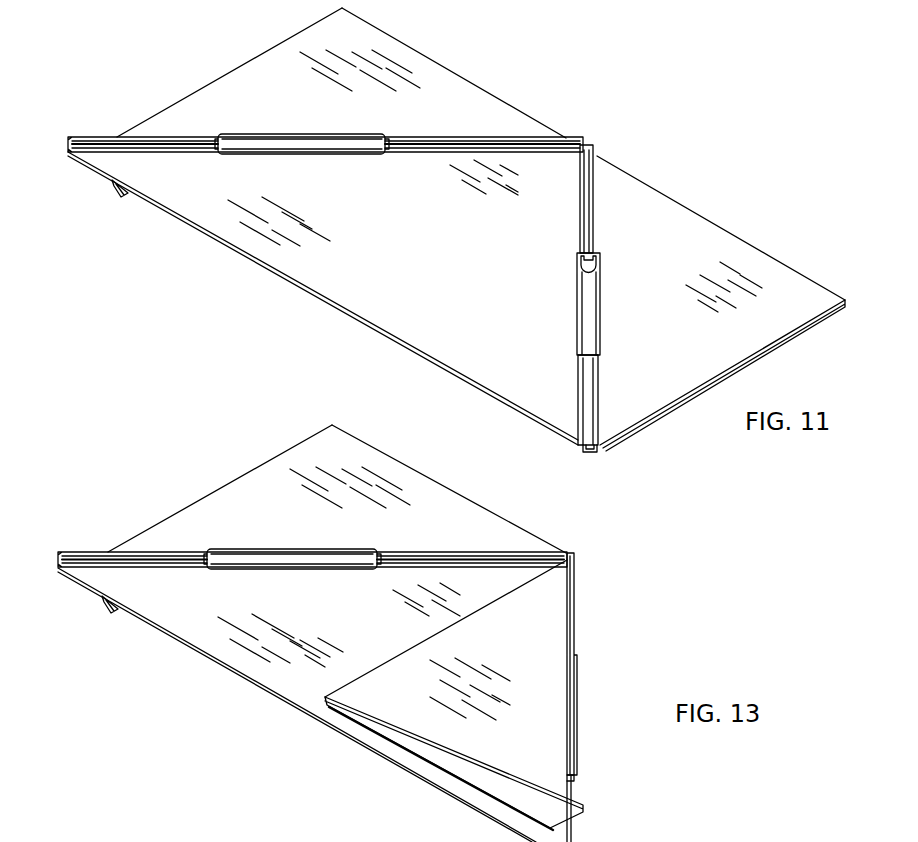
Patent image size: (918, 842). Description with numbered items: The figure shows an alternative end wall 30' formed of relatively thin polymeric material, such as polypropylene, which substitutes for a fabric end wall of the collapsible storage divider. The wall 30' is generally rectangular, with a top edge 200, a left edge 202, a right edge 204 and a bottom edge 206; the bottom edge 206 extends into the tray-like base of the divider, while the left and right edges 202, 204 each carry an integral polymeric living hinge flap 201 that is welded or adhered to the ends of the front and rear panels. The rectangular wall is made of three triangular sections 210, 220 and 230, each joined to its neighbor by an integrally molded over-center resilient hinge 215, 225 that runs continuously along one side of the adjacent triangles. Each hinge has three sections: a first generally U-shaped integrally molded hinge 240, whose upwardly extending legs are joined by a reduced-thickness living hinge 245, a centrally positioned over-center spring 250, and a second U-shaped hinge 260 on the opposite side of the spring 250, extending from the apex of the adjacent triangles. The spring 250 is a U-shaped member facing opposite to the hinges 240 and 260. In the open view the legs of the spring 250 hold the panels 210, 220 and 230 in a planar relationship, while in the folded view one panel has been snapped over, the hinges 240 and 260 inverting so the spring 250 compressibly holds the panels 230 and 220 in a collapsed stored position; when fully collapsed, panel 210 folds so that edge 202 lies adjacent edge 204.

In FIG. 11, the end panel or wall 30' is at (555, 85).
In FIG. 11, the top edge 200 is at (465, 225).
In FIG. 13, the top edge 200 is at (352, 627).
In FIG. 11, the living hinge flap 201 is at (121, 191).
In FIG. 13, the living hinge flap 201 is at (112, 607).
In FIG. 11, the left edge 202 is at (250, 58).
In FIG. 13, the left edge 202 is at (242, 476).
In FIG. 11, the right edge 204 is at (782, 343).
In FIG. 13, the right edge 204 is at (497, 588).
In FIG. 11, the bottom edge 206 is at (208, 235).
In FIG. 13, the bottom edge 206 is at (200, 650).
In FIG. 11, the triangular section 210 is at (336, 33).
In FIG. 13, the triangular section 210 is at (328, 450).
In FIG. 11, the over-center resilient hinge 215 is at (280, 127).
In FIG. 13, the over-center resilient hinge 215 is at (270, 543).
In FIG. 11, the triangular section 220 is at (308, 270).
In FIG. 13, the triangular section 220 is at (302, 685).
In FIG. 11, the over-center resilient hinge 225 is at (614, 222).
In FIG. 11, the triangular section 230 is at (720, 238).
In FIG. 13, the triangular section 230 is at (548, 610).
In FIG. 11, the U-shaped hinge 240 is at (452, 133).
In FIG. 13, the U-shaped hinge 240 is at (446, 550).
In FIG. 11, the living hinge 245 is at (580, 196).
In FIG. 11, the over-center spring 250 is at (324, 132).
In FIG. 13, the over-center spring 250 is at (316, 549).
In FIG. 11, the U-shaped hinge 260 is at (173, 160).
In FIG. 13, the U-shaped hinge 260 is at (165, 577).